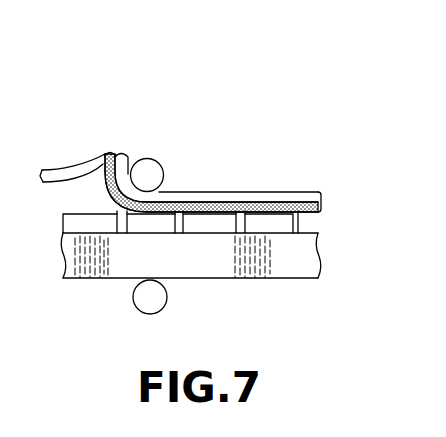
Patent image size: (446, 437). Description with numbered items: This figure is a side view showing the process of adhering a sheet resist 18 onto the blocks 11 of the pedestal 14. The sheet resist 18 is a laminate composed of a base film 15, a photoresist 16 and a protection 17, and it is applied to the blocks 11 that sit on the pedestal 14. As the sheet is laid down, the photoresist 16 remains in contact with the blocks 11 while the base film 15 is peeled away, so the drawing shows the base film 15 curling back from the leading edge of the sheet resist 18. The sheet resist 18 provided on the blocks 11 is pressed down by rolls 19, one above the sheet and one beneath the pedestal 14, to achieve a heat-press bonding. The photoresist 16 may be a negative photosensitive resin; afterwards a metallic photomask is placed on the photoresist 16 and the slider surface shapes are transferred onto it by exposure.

The sheet resist 18 is at (196, 60).
The base film 15 is at (95, 164).
The photoresist 16 is at (112, 153).
The protection 17 is at (122, 156).
The rolls 19 is at (146, 175).
The blocks 11 is at (289, 228).
The pedestal 14 is at (350, 258).